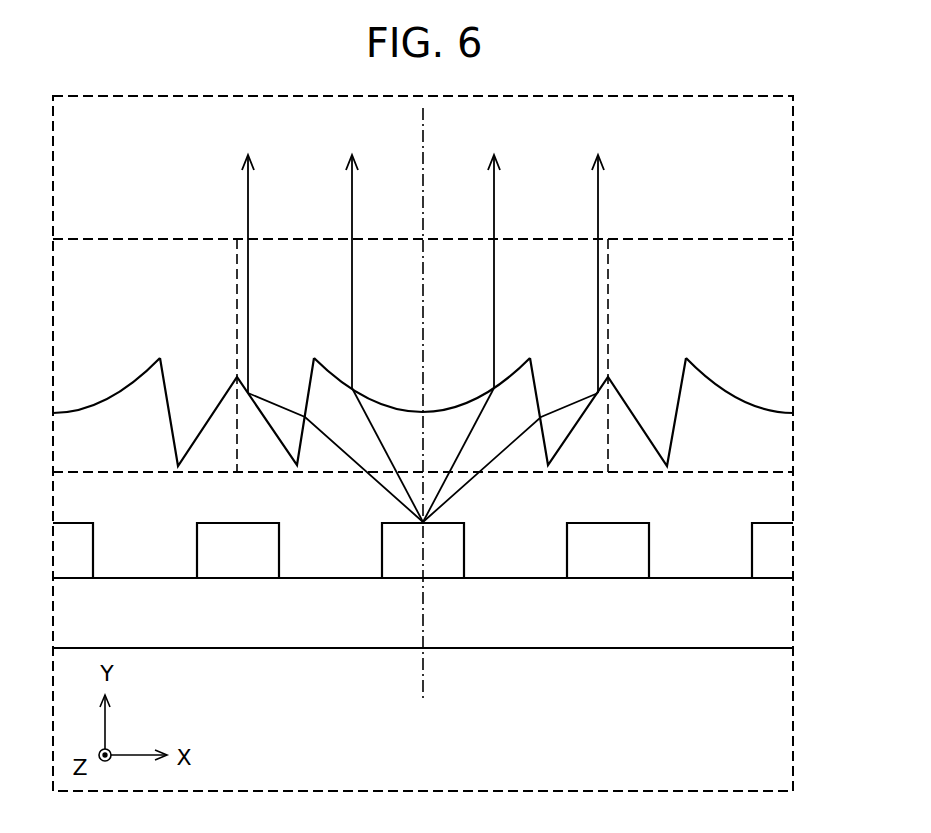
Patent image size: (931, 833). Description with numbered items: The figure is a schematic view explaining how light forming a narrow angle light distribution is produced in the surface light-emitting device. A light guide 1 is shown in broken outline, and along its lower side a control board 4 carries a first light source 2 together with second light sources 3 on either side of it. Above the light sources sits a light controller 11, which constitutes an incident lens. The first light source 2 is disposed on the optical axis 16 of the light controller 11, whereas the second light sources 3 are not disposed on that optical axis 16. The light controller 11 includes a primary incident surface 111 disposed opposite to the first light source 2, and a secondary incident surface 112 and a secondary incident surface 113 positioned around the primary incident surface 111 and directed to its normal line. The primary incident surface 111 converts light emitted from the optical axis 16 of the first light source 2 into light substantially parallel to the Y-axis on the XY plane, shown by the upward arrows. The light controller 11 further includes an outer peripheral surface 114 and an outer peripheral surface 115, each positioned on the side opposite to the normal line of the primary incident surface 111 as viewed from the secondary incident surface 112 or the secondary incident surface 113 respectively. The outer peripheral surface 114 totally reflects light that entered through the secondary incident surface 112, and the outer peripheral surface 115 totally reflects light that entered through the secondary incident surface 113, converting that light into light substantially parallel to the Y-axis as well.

The light guide 1 is at (778, 150).
The first light source 2 is at (381, 550).
The second light source 3 is at (196, 550).
The control board 4 is at (332, 650).
The light controller 11 is at (134, 236).
The optical axis 16 is at (423, 143).
The primary incident surface 111 is at (343, 381).
The secondary incident surface 112 is at (303, 452).
The secondary incident surface 113 is at (545, 462).
The outer peripheral surface 114 is at (285, 450).
The outer peripheral surface 115 is at (558, 447).